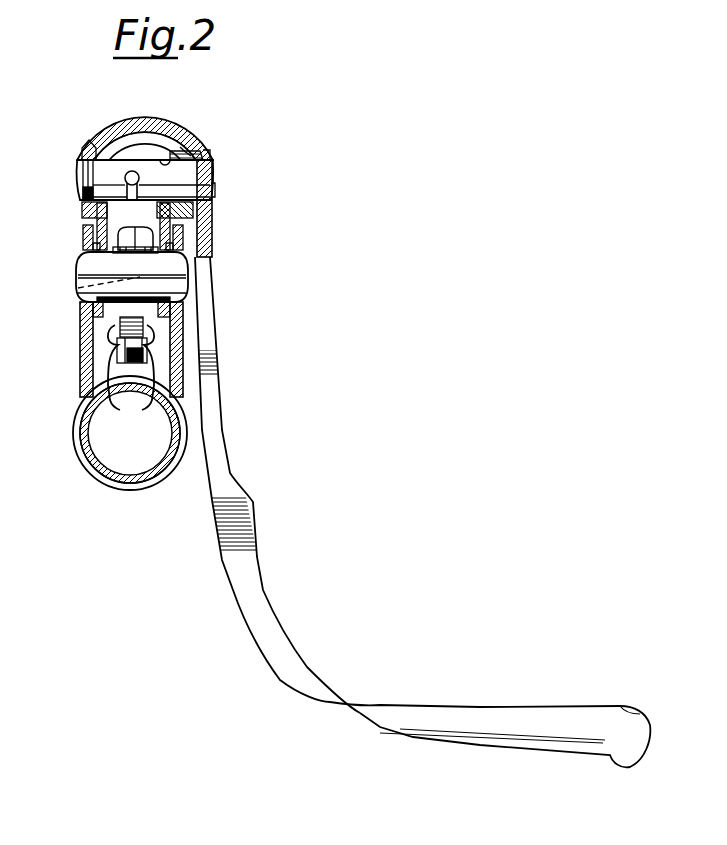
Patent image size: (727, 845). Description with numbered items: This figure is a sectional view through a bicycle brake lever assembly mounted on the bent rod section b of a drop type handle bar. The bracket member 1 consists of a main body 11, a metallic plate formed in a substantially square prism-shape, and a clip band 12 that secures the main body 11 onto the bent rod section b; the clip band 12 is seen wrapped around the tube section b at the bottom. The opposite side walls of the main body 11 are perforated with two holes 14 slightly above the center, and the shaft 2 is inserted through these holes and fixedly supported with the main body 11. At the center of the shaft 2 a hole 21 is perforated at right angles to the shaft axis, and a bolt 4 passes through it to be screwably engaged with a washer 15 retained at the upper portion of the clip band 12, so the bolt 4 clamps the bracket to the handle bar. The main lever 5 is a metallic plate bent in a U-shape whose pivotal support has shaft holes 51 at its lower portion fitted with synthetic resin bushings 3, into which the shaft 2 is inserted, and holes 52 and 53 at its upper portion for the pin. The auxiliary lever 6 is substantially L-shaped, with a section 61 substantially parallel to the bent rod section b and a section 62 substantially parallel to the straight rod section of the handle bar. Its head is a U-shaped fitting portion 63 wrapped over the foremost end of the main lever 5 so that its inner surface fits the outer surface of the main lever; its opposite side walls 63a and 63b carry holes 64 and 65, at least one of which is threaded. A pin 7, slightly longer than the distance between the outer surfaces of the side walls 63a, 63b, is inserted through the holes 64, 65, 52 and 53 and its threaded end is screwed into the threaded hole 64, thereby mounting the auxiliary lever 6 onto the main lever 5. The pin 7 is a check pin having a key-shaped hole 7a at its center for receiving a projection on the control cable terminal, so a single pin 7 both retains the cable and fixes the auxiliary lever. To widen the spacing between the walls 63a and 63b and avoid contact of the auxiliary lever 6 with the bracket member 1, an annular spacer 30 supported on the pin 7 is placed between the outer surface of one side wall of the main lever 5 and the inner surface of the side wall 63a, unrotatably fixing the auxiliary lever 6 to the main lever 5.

The bracket member 1 is at (80, 362).
The shaft 2 is at (94, 262).
The synthetic resin bushing 3 is at (84, 299).
The bolt 4 is at (200, 238).
The main lever 5 is at (131, 120).
The auxiliary lever 6 is at (422, 512).
The pin 7 is at (200, 196).
The key-shaped hole 7a is at (126, 181).
The main body 11 is at (176, 341).
The clip band 12 is at (72, 440).
The hole 14 is at (186, 291).
The washer 15 is at (133, 347).
The hole 21 is at (78, 288).
The annular spacer 30 is at (208, 151).
The shaft hole 51 is at (86, 250).
The hole 52 is at (84, 158).
The hole 53 is at (193, 143).
The section 61 is at (223, 443).
The section 62 is at (467, 718).
The fitting portion 63 is at (165, 122).
The side wall 63a is at (82, 207).
The side wall 63b is at (213, 152).
The hole 64 is at (79, 172).
The hole 65 is at (213, 172).
The bent rod section b is at (109, 487).